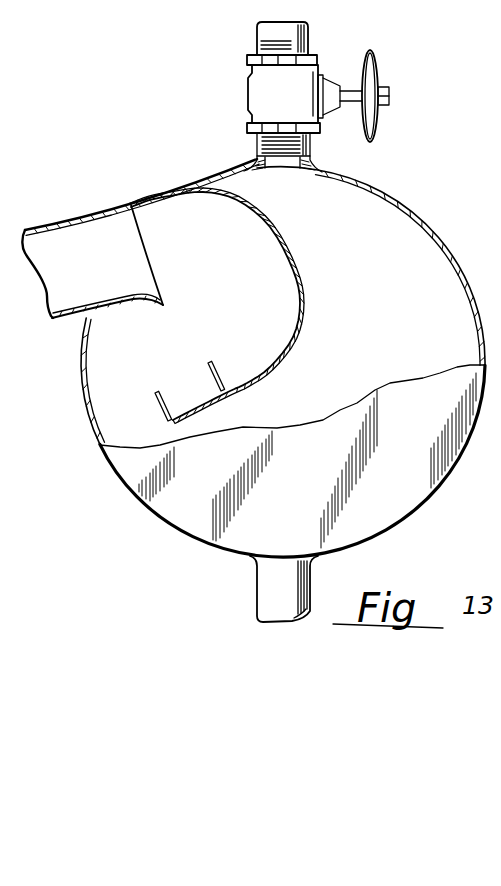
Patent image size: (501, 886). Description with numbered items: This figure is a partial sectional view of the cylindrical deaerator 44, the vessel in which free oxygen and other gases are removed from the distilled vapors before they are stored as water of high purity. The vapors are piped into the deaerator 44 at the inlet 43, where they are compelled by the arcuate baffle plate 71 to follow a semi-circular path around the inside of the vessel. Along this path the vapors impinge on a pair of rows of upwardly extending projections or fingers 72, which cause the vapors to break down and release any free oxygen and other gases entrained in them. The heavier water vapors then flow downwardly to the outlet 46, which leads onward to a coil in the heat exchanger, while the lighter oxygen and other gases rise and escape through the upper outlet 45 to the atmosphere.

The inlet 43 is at (48, 229).
The deaerator 44 is at (448, 246).
The outlet 45 is at (310, 152).
The outlet 46 is at (257, 598).
The arcuate baffle plate 71 is at (233, 191).
The projections or fingers 72 is at (208, 375).